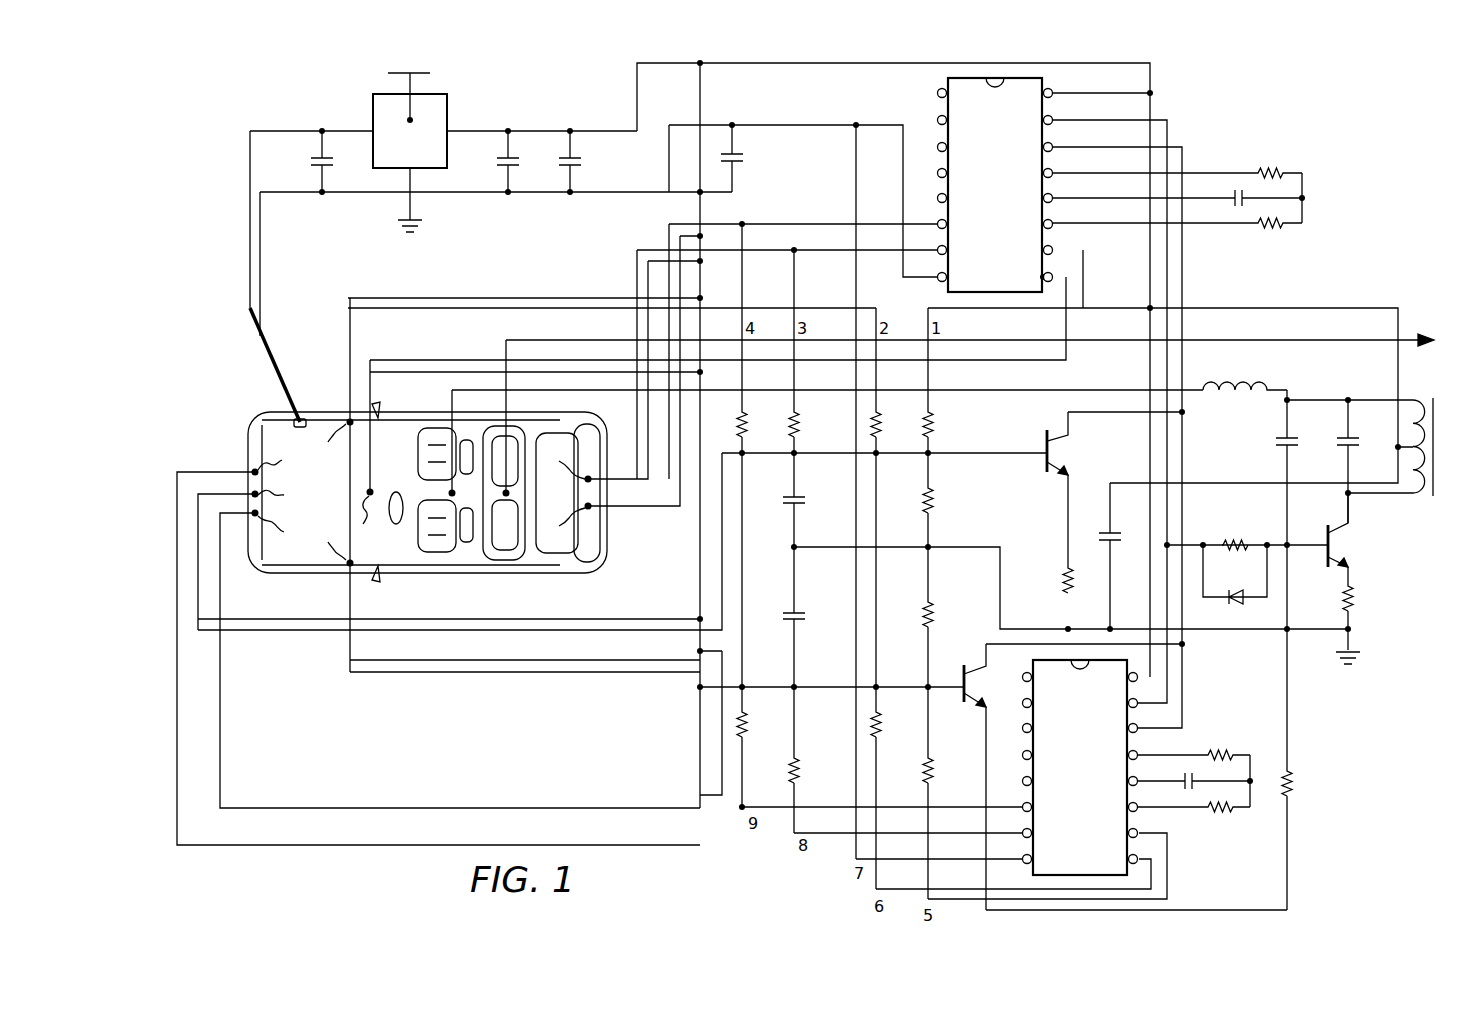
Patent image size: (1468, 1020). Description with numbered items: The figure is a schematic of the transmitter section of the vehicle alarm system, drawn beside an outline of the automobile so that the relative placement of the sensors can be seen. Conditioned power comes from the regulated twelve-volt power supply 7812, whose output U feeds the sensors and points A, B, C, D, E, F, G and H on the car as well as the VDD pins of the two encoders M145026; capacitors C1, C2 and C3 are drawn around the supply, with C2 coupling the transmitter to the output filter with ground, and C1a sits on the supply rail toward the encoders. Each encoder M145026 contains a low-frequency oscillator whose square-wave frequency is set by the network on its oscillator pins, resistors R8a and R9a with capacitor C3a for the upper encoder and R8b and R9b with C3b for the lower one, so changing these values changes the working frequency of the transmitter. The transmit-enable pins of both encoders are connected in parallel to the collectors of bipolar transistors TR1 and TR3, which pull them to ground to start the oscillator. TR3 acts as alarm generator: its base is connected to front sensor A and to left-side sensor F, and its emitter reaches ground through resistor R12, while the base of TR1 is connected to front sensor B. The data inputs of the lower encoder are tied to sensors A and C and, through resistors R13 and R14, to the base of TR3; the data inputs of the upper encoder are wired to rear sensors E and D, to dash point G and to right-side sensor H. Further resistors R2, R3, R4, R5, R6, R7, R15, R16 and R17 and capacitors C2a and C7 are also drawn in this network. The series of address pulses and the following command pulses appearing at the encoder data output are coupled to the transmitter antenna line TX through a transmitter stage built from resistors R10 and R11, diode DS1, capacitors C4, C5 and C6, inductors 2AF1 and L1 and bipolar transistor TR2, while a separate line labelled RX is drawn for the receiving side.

The regulated power supply integrated circuit 7812 is at (408, 165).
The capacitor C1 is at (333, 161).
The capacitor C2 is at (519, 161).
The capacitor C3 is at (581, 161).
The capacitor C1a is at (749, 158).
The capacitor C2a is at (811, 501).
The capacitor C7 is at (806, 617).
The capacitor C4 is at (1298, 514).
The capacitor C5 is at (1360, 461).
The capacitor C6 is at (1117, 556).
The oscillator capacitor C3a is at (1175, 198).
The oscillator capacitor C3b is at (1191, 781).
The oscillator resistor R8a is at (1175, 162).
The oscillator resistor R9a is at (1175, 234).
The oscillator resistor R8b is at (1191, 744).
The oscillator resistor R9b is at (1191, 818).
The resistor R2 is at (754, 424).
The resistor R3 is at (806, 424).
The resistor R4 is at (888, 424).
The resistor R5 is at (940, 424).
The resistor R6 is at (940, 500).
The resistor R7 is at (1080, 580).
The resistor R10 is at (1235, 535).
The resistor R11 is at (1366, 598).
The resistor R12 is at (1304, 769).
The resistor R13 is at (945, 770).
The resistor R14 is at (893, 724).
The resistor R15 is at (945, 614).
The resistor R16 is at (811, 770).
The resistor R17 is at (759, 724).
The diode DS1 is at (1235, 574).
The bipolar transistor TR1 is at (1064, 489).
The bipolar transistor TR2 is at (1345, 578).
The bipolar transistor TR3 is at (983, 777).
The inductor 2AF1 is at (1203, 367).
The inductor L1 is at (1435, 447).
The encoder integrated circuit M145026 is at (1038, 476).
The receive line RX is at (489, 341).
The transmitter antenna line TX is at (436, 391).
The sensor A is at (275, 454).
The sensor B is at (277, 499).
The sensor C is at (276, 531).
The sensor D is at (564, 462).
The sensor E is at (564, 526).
The sensor F is at (333, 541).
The point G is at (369, 520).
The sensor H is at (333, 445).